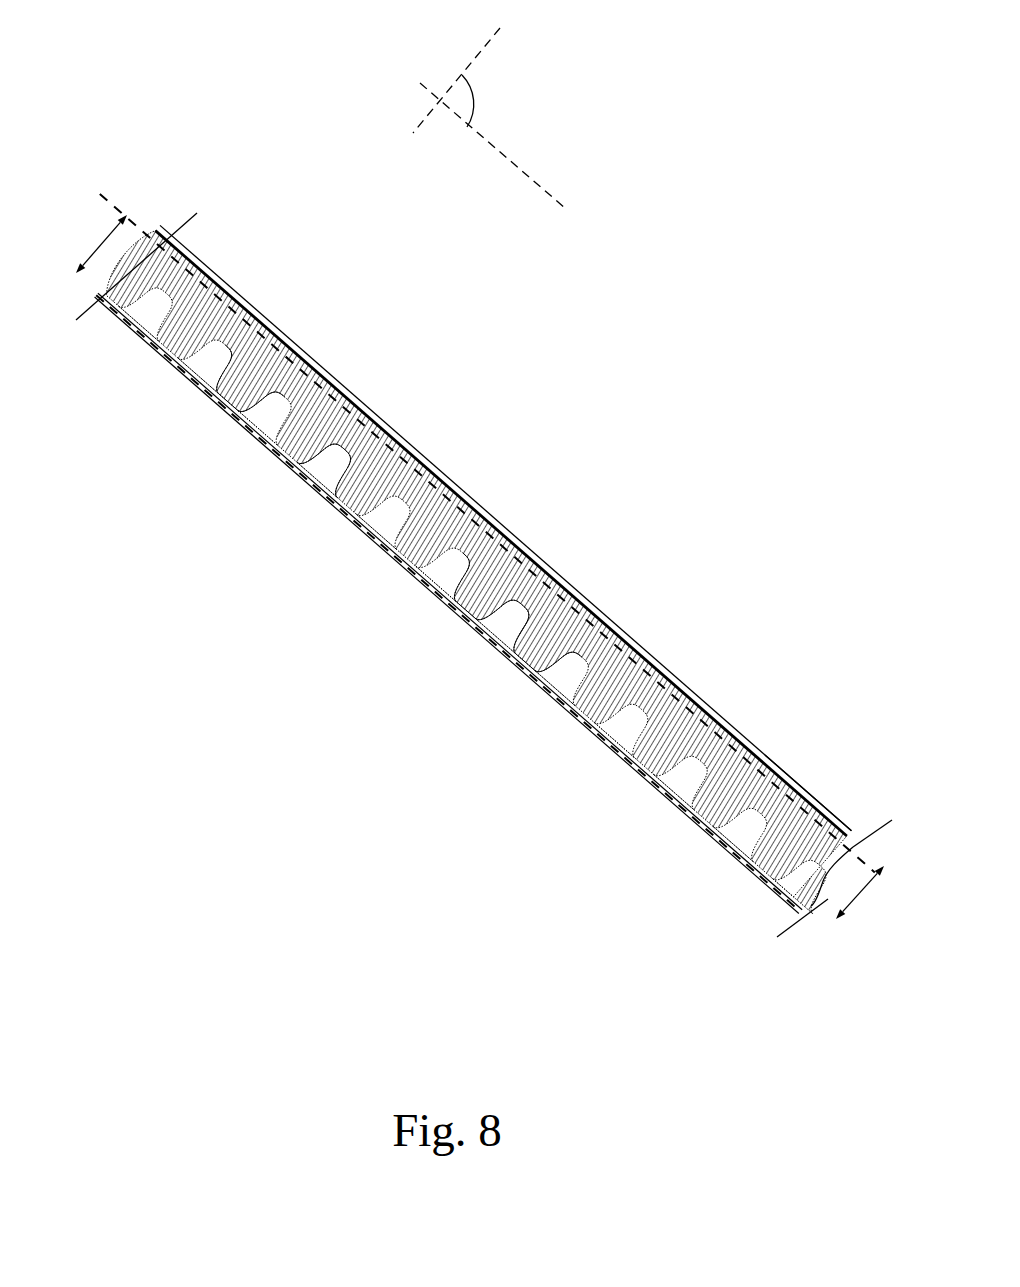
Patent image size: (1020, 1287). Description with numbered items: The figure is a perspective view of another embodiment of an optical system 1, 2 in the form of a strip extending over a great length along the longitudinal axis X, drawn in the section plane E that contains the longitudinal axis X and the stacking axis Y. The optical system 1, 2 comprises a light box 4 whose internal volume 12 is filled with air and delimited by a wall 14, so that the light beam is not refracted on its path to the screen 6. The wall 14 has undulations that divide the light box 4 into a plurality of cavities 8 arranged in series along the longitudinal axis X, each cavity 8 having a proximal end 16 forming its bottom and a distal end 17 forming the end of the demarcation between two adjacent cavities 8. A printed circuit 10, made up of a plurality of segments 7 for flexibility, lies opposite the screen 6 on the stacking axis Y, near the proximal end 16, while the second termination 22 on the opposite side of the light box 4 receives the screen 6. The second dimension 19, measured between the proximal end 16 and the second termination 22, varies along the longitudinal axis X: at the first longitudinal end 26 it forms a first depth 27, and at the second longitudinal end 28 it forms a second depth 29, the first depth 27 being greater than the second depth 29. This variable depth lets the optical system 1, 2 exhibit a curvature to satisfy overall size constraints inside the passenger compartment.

The optical system 1 is at (465, 557).
The optical system 2 is at (465, 557).
The light box 4 is at (479, 594).
The screen 6 is at (500, 533).
The segment 7 is at (449, 602).
The cavity 8 is at (241, 386).
The printed circuit 10 is at (566, 378).
The internal volume 12 is at (539, 646).
The wall 14 is at (331, 464).
The proximal end 16 is at (813, 907).
The distal end 17 is at (481, 570).
The second dimension 19 is at (142, 112).
The second termination 22 is at (487, 533).
The first longitudinal end 26 is at (505, 527).
The first depth 27 is at (95, 250).
The second longitudinal end 28 is at (808, 793).
The second depth 29 is at (852, 878).
The longitudinal axis X is at (567, 208).
The stacking axis Y is at (490, 42).
The section plane E is at (467, 97).